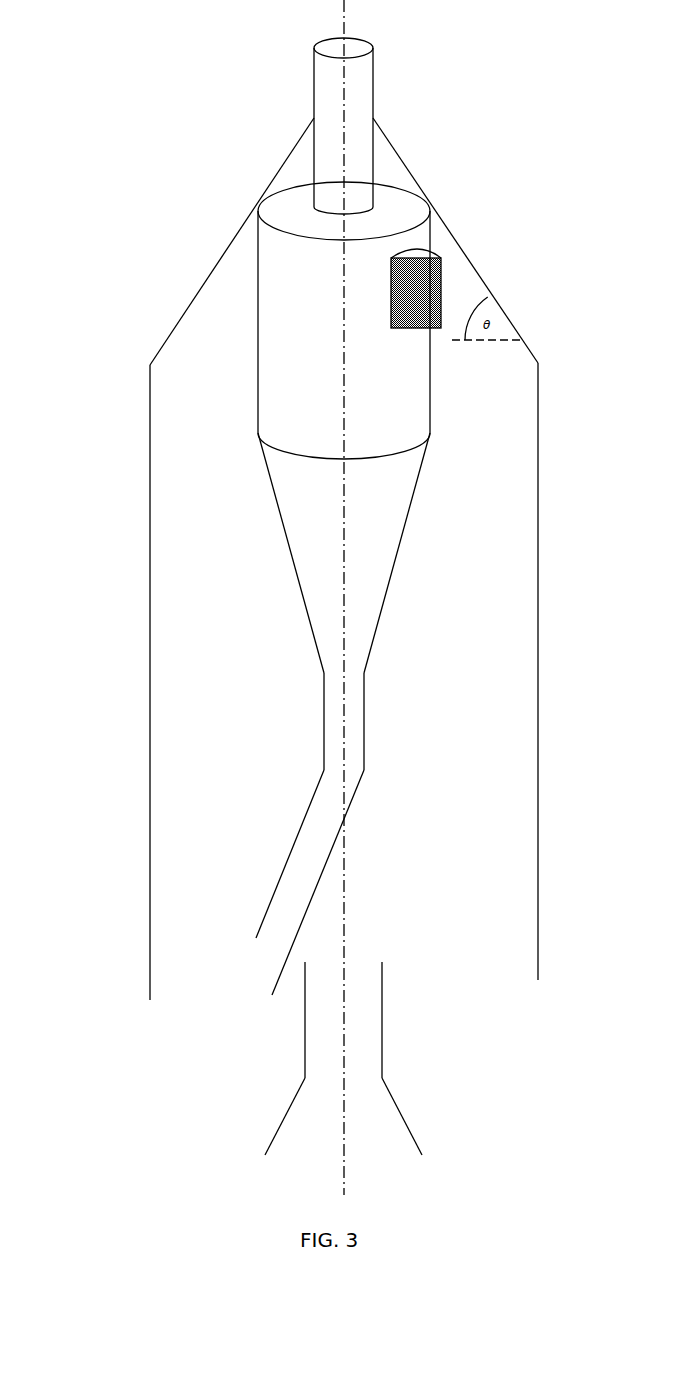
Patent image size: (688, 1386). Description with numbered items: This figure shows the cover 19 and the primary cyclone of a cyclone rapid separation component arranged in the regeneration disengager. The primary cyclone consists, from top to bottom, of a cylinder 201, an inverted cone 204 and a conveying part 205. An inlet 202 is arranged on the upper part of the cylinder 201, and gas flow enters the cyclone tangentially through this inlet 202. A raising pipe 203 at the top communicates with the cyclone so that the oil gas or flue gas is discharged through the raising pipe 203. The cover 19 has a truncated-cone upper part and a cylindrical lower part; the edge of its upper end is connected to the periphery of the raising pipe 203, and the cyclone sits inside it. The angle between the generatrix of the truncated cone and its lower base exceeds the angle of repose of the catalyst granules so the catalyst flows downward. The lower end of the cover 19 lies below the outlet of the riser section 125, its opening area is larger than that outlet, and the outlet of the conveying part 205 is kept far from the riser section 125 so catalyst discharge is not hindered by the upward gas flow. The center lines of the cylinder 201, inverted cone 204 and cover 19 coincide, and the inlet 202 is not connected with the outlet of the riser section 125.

The cover 19 is at (540, 410).
The cylinder 201 is at (290, 420).
The inlet 202 is at (425, 295).
The raising pipe 203 is at (360, 132).
The inverted cone 204 is at (308, 527).
The conveying part 205 is at (308, 845).
The riser section 125 is at (358, 1010).